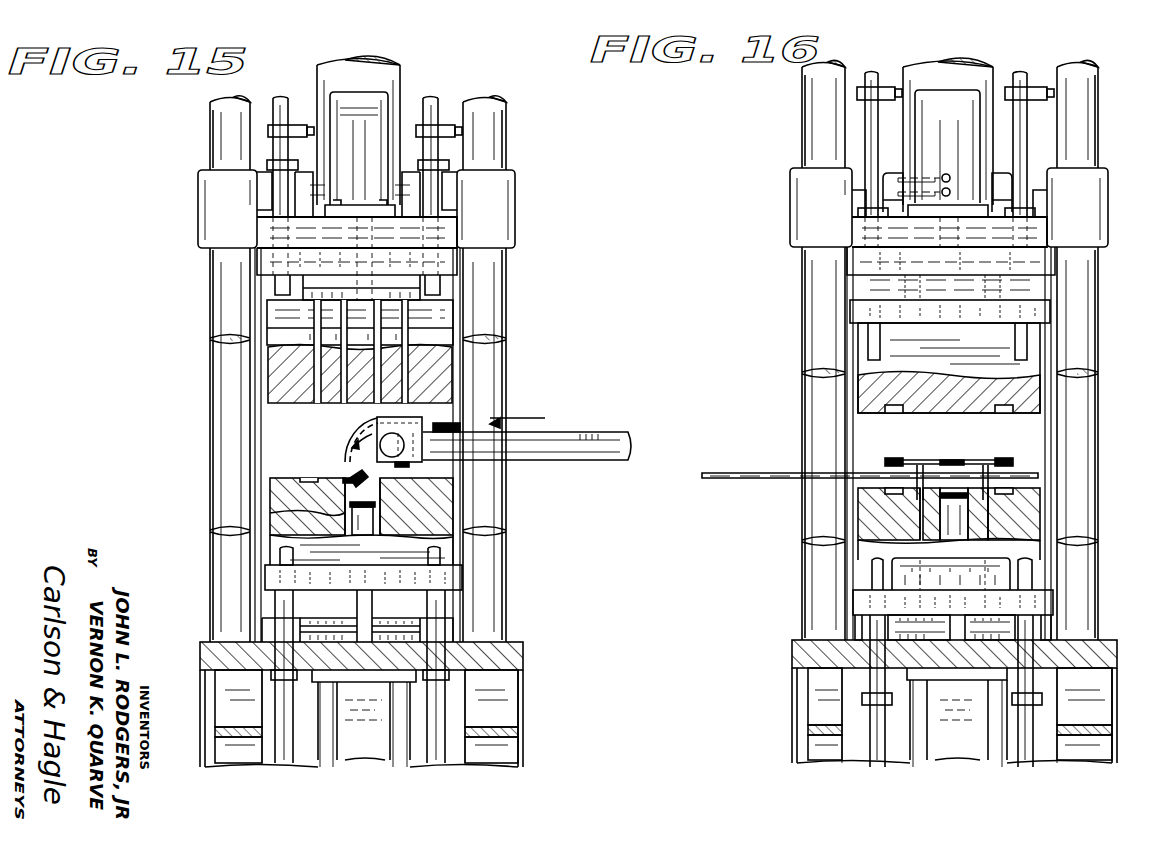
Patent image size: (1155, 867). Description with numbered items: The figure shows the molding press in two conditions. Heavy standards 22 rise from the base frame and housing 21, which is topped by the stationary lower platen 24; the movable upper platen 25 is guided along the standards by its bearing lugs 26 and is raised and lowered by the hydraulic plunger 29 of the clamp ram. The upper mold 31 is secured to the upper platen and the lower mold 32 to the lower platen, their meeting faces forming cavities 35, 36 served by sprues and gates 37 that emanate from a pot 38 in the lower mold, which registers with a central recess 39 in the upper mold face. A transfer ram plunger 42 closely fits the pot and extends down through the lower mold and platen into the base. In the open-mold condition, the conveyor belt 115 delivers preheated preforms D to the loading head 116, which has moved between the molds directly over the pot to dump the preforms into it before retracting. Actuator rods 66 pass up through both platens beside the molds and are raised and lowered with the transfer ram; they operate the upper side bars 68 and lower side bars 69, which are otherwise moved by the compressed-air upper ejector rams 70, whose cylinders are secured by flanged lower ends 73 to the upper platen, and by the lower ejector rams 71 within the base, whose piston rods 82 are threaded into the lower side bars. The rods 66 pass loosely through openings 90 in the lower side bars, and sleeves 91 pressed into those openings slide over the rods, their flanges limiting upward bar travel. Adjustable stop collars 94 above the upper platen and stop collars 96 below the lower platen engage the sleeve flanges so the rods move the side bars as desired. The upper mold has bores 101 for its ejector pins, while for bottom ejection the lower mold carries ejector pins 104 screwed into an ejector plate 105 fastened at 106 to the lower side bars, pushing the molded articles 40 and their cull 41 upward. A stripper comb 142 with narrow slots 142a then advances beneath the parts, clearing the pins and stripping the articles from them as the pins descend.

In FIG. 16, the base frame and housing 21 is at (870, 750).
In FIG. 15, the standards 22 is at (210, 114).
In FIG. 16, the standards 22 is at (802, 100).
In FIG. 15, the lower platen 24 is at (215, 658).
In FIG. 16, the lower platen 24 is at (808, 650).
In FIG. 15, the upper platen 25 is at (462, 236).
In FIG. 16, the upper platen 25 is at (805, 236).
In FIG. 15, the bearing lugs 26 is at (490, 196).
In FIG. 16, the bearing lugs 26 is at (800, 190).
In FIG. 15, the plunger 29 is at (392, 72).
In FIG. 15, the upper mold 31 is at (455, 332).
In FIG. 16, the upper mold 31 is at (1045, 352).
In FIG. 15, the lower mold 32 is at (272, 490).
In FIG. 16, the lower mold 32 is at (1045, 510).
In FIG. 15, the cavities 35 is at (355, 366).
In FIG. 15, the cavities 36 is at (342, 480).
In FIG. 15, the sprues and gates 37 is at (400, 418).
In FIG. 15, the pot 38 is at (375, 512).
In FIG. 15, the central recess 39 is at (350, 402).
In FIG. 16, the molded articles 40 is at (894, 458).
In FIG. 16, the cull 41 is at (955, 460).
In FIG. 15, the transfer ram plunger 42 is at (300, 520).
In FIG. 15, the actuator rods 66 is at (283, 98).
In FIG. 16, the actuator rods 66 is at (874, 73).
In FIG. 15, the upper side bars 68 is at (455, 278).
In FIG. 16, the upper side bars 68 is at (850, 311).
In FIG. 15, the lower side bars 69 is at (463, 580).
In FIG. 16, the lower side bars 69 is at (1053, 600).
In FIG. 15, the upper ejector rams 70 is at (341, 92).
In FIG. 16, the upper ejector rams 70 is at (936, 92).
In FIG. 15, the lower ejector rams 71 is at (362, 750).
In FIG. 16, the lower ejector rams 71 is at (958, 750).
In FIG. 16, the flanged lower ends 73 is at (990, 200).
In FIG. 15, the piston rod 82 is at (372, 610).
In FIG. 16, the openings 90 is at (1030, 612).
In FIG. 15, the sleeves 91 is at (285, 600).
In FIG. 16, the sleeves 91 is at (875, 625).
In FIG. 15, the stop collars 94 is at (270, 124).
In FIG. 16, the stop collars 94 is at (860, 95).
In FIG. 16, the stop collars 96 is at (862, 698).
In FIG. 15, the bores 101 is at (335, 368).
In FIG. 16, the ejector pins 104 is at (935, 512).
In FIG. 16, the ejector plate 105 is at (1035, 572).
In FIG. 16, the fastening 106 is at (992, 558).
In FIG. 15, the conveyor belt 115 is at (575, 442).
In FIG. 15, the loading head 116 is at (360, 428).
In FIG. 16, the stripper comb 142 is at (730, 460).
In FIG. 16, the slots 142a is at (915, 490).
In FIG. 15, the preforms D is at (350, 480).